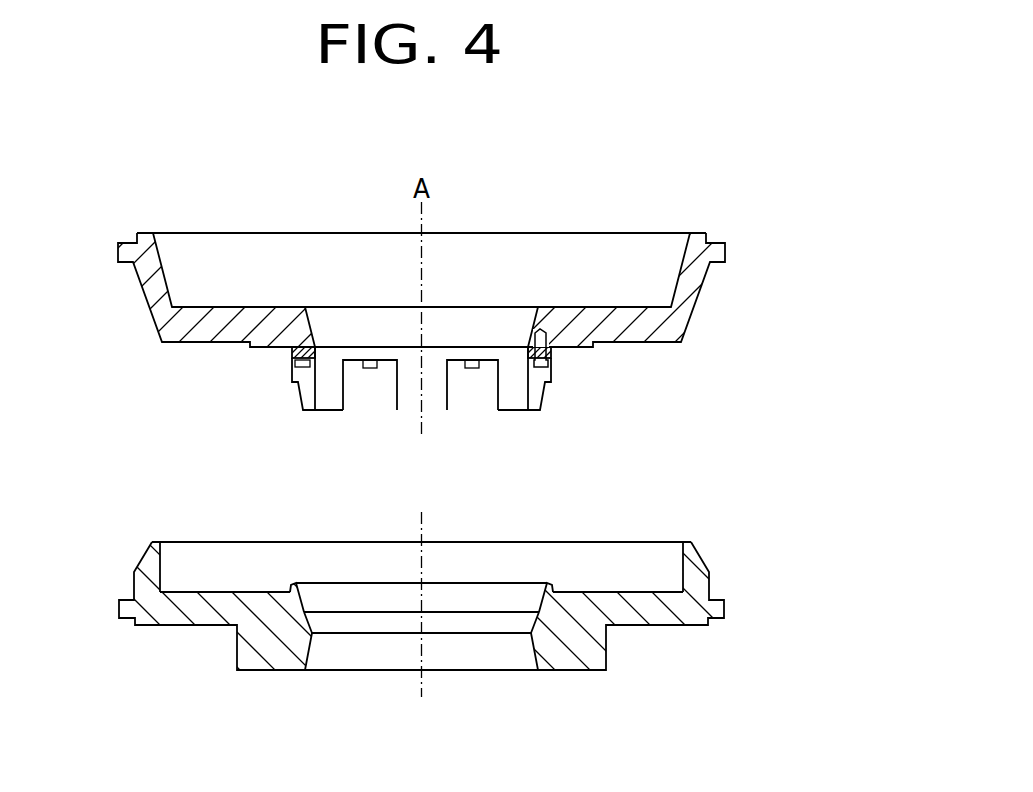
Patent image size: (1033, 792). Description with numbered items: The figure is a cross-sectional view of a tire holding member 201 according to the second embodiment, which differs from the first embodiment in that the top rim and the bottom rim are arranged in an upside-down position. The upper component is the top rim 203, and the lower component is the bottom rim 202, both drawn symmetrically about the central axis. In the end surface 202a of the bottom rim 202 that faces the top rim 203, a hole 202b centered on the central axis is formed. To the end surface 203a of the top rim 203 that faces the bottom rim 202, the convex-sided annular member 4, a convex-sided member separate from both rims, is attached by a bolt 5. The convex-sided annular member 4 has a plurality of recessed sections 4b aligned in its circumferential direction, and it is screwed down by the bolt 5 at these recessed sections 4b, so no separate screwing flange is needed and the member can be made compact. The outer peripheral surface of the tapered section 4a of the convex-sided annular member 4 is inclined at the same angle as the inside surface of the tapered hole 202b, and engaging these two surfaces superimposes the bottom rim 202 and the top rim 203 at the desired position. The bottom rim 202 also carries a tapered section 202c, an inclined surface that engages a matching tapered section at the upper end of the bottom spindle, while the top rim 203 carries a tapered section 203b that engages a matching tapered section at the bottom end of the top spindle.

The tire holding member 201 is at (703, 208).
The top rim 203 is at (677, 323).
The end surface of the top rim 203a is at (638, 344).
The tapered section 203b is at (311, 326).
The convex-sided annular member 4 is at (410, 396).
The tapered section 4a is at (298, 393).
The recessed sections 4b is at (497, 391).
The bolt 5 is at (544, 327).
The bottom rim 202 is at (147, 587).
The end surface of the bottom rim 202a is at (237, 592).
The hole 202b is at (527, 586).
The tapered section 202c is at (310, 658).